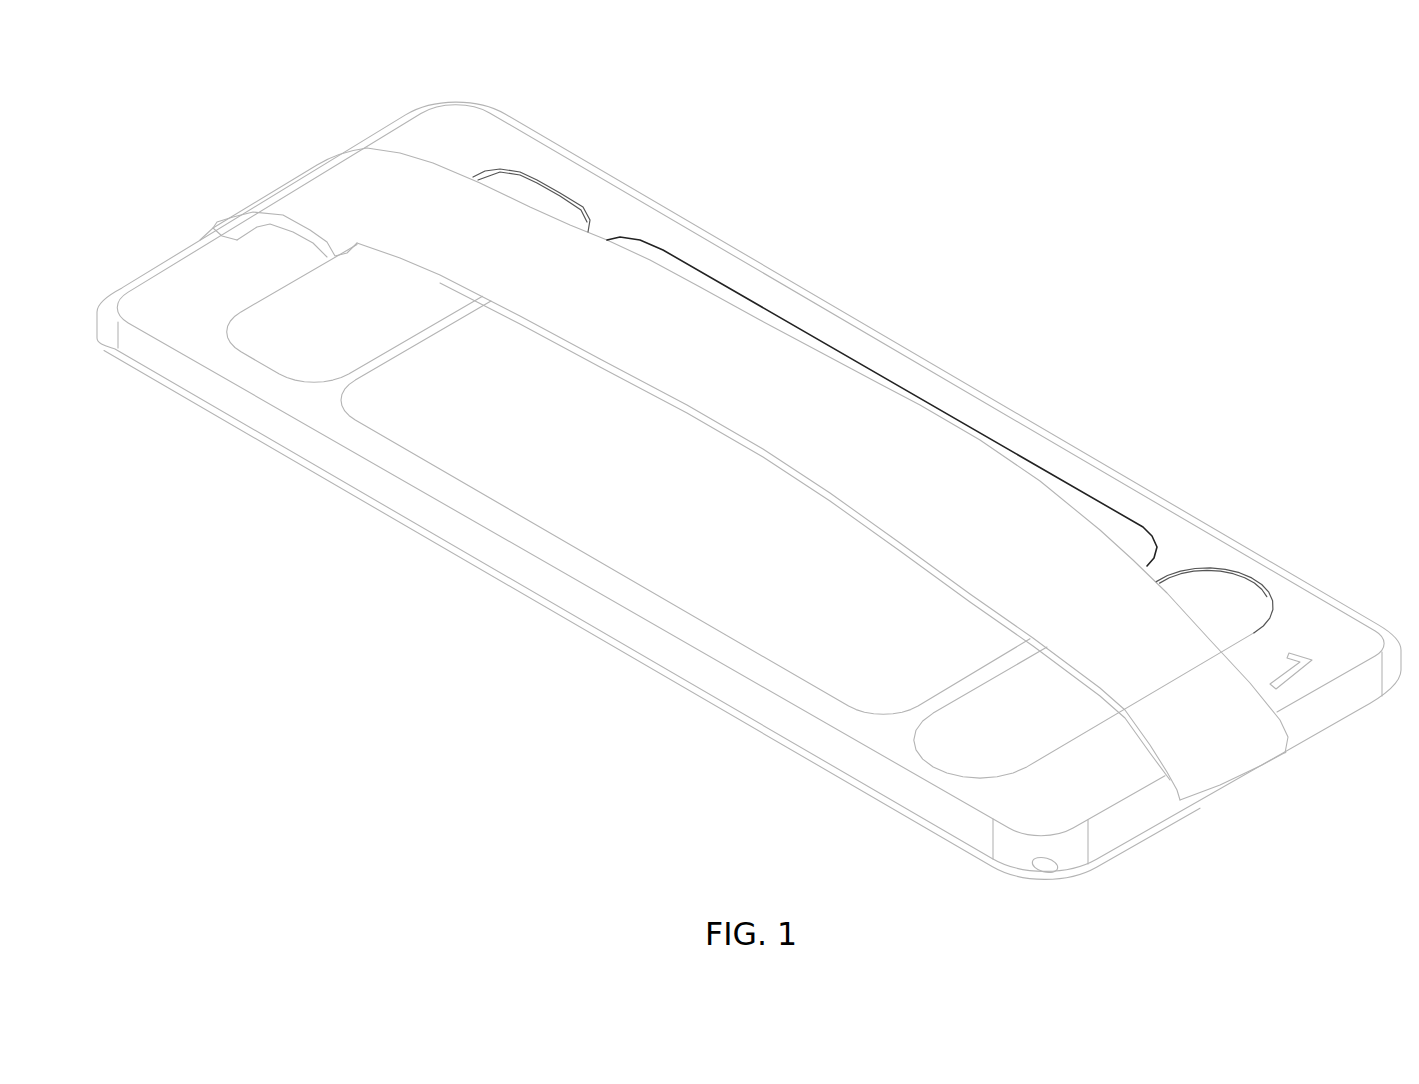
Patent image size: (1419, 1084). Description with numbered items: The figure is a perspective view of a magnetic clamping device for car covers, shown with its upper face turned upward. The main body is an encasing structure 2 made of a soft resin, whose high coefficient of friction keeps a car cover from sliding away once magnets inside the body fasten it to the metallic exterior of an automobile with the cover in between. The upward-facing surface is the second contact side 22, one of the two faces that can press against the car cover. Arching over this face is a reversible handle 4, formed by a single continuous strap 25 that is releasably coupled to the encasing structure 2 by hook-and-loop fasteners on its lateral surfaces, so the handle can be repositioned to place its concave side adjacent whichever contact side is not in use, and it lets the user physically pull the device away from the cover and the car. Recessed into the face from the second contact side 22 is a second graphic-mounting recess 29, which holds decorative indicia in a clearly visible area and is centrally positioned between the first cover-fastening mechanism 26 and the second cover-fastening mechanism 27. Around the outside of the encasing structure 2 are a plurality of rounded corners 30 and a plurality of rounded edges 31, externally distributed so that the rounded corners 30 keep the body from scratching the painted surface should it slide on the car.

The encasing structure 2 is at (483, 124).
The reversible handle 4 is at (316, 172).
The second contact side 22 is at (762, 289).
The single continuous strap 25 is at (778, 394).
The first cover-fastening mechanism 26 is at (1038, 711).
The second cover-fastening mechanism 27 is at (405, 307).
The second graphic-mounting recess 29 is at (705, 507).
The plurality of rounded corners 30 is at (468, 102).
The plurality of rounded edges 31 is at (176, 258).